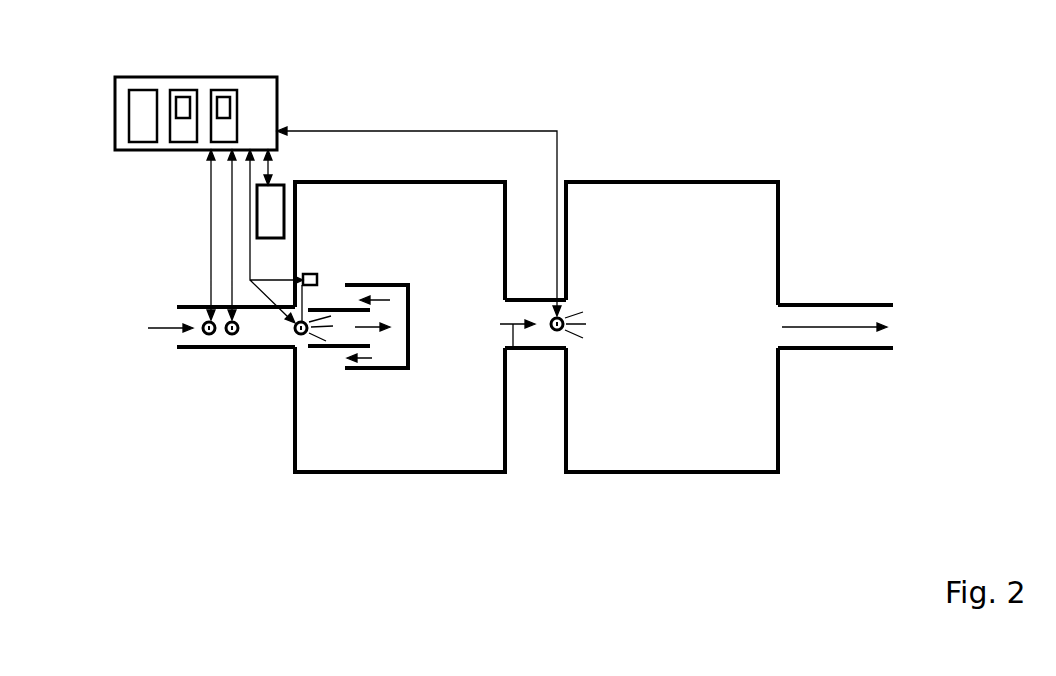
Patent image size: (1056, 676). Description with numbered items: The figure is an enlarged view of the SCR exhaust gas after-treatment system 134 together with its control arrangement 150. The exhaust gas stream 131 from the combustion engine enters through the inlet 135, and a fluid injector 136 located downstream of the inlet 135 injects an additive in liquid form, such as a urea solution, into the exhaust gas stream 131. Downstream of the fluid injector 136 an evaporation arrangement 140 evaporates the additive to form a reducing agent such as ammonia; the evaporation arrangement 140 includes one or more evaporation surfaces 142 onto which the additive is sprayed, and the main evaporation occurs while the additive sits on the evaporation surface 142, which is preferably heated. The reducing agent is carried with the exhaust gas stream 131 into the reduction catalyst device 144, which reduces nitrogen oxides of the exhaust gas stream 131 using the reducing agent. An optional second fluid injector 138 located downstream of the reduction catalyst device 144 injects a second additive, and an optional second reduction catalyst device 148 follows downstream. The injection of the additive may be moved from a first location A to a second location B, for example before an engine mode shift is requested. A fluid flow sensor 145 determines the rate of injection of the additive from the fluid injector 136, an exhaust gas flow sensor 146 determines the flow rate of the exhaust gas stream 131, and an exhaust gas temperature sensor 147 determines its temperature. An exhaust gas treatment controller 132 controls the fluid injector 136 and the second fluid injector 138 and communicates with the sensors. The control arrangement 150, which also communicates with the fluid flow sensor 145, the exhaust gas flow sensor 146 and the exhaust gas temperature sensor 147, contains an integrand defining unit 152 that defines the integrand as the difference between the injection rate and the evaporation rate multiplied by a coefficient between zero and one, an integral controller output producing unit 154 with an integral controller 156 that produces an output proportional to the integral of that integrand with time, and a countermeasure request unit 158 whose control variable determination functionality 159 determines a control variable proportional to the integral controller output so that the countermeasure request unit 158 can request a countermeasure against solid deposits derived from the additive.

The exhaust gas stream 131 is at (175, 325).
The exhaust gas treatment controller 132 is at (276, 192).
The SCR exhaust gas after-treatment system 134 is at (881, 139).
The inlet 135 is at (292, 350).
The fluid injector 136 is at (304, 336).
The second fluid injector 138 is at (559, 334).
The evaporation arrangement 140 is at (362, 274).
The evaporation surface 142 is at (343, 313).
The reduction catalyst device 144 is at (445, 243).
The fluid flow sensor 145 is at (310, 274).
The exhaust gas flow sensor 146 is at (208, 336).
The exhaust gas temperature sensor 147 is at (232, 336).
The second reduction catalyst device 148 is at (708, 233).
The control arrangement 150 is at (265, 92).
The integrand defining unit 152 is at (142, 125).
The integral controller output producing unit 154 is at (182, 135).
The integral controller 156 is at (181, 107).
The countermeasure request unit 158 is at (233, 110).
The control variable determination functionality 159 is at (223, 107).
The first location A is at (254, 447).
The second location B is at (605, 367).